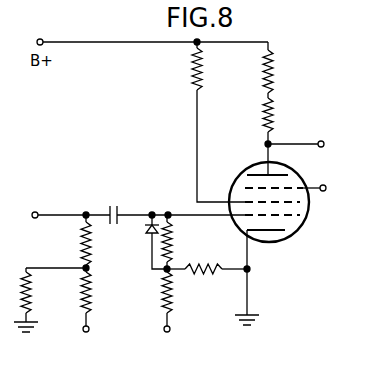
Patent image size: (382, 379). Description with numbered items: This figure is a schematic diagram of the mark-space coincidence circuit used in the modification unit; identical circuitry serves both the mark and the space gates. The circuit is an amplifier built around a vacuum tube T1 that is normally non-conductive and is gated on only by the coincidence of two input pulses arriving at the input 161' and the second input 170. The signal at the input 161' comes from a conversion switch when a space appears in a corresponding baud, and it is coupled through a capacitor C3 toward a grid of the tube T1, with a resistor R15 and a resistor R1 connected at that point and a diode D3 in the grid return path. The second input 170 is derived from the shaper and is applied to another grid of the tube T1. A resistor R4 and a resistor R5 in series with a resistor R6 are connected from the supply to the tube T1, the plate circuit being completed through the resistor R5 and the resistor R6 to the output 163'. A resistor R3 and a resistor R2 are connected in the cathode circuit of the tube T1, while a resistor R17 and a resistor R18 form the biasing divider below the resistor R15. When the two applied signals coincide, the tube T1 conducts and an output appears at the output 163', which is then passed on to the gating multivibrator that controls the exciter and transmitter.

The input 161' is at (67, 195).
The output 163' is at (311, 135).
The second input 170 is at (324, 191).
The 510K resistor R1 is at (174, 223).
The 160K resistor R2 is at (172, 291).
The 12K resistor R3 is at (187, 267).
The 5.6K resistor R4 is at (192, 84).
The 5.6K resistor R5 is at (288, 70).
The 6.2K resistor R6 is at (288, 136).
The 100K resistor R15 is at (60, 244).
The 12K resistor R17 is at (91, 289).
The 20K resistor R18 is at (43, 300).
The .022 capacitor C3 is at (122, 211).
The 1N54A diode D3 is at (146, 236).
The 6AS6 vacuum tube T1 is at (257, 224).